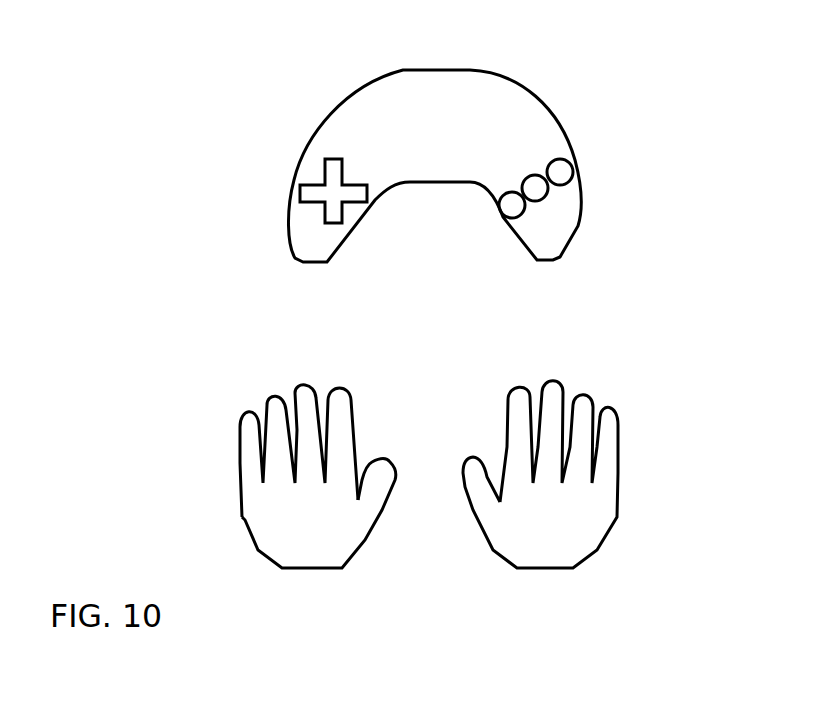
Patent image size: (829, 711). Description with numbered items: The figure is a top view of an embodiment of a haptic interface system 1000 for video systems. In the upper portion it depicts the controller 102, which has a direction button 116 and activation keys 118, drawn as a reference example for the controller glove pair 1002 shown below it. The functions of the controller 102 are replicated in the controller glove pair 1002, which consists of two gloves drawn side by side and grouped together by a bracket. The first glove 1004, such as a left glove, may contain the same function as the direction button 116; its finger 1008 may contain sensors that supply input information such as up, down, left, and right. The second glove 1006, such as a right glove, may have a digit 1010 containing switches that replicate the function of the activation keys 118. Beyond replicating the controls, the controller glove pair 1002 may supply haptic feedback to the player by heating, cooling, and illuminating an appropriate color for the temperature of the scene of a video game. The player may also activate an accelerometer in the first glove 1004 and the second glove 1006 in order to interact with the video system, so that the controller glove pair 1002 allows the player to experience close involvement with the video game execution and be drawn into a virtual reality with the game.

The haptic interface system 1000 is at (203, 46).
The controller 102 is at (422, 131).
The direction button 116 is at (333, 196).
The activation keys 118 is at (562, 172).
The controller glove pair 1002 is at (232, 565).
The first glove 1004 is at (260, 523).
The second glove 1006 is at (605, 520).
The finger 1008 is at (248, 412).
The digit 1010 is at (520, 393).